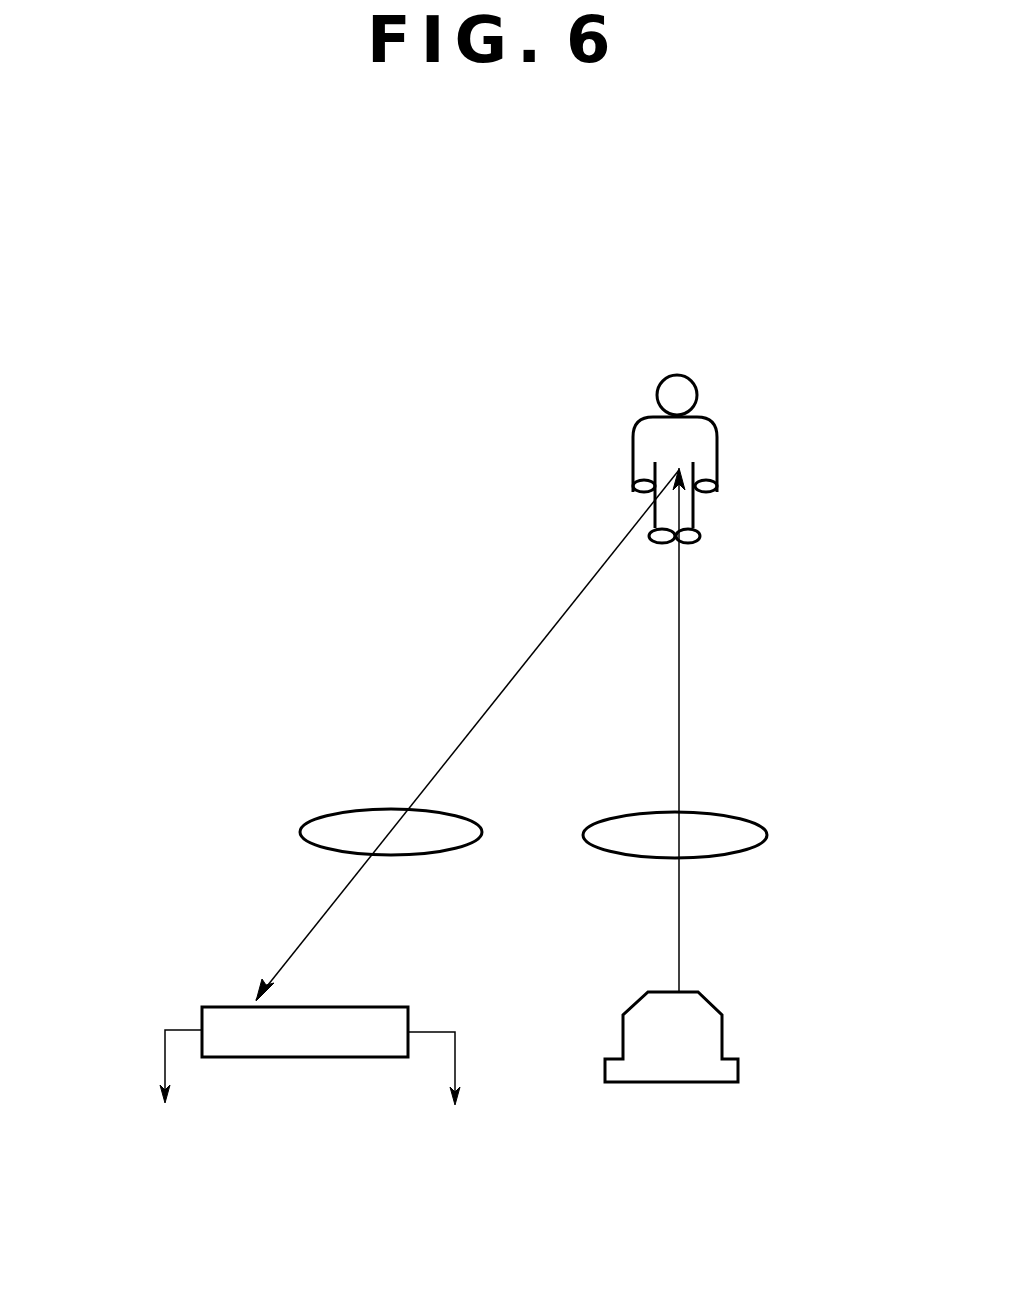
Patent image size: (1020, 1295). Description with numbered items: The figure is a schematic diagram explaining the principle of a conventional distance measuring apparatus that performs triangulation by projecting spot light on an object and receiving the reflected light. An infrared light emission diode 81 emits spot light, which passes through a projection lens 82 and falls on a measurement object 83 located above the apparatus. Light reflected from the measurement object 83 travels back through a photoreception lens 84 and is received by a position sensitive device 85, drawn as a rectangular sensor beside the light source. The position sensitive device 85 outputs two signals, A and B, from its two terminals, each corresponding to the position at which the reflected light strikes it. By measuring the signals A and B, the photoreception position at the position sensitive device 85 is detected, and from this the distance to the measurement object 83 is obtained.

The infrared light emission diode 81 is at (738, 1068).
The projection lens 82 is at (746, 818).
The measurement object 83 is at (717, 437).
The photoreception lens 84 is at (328, 812).
The position sensitive device 85 is at (387, 1007).